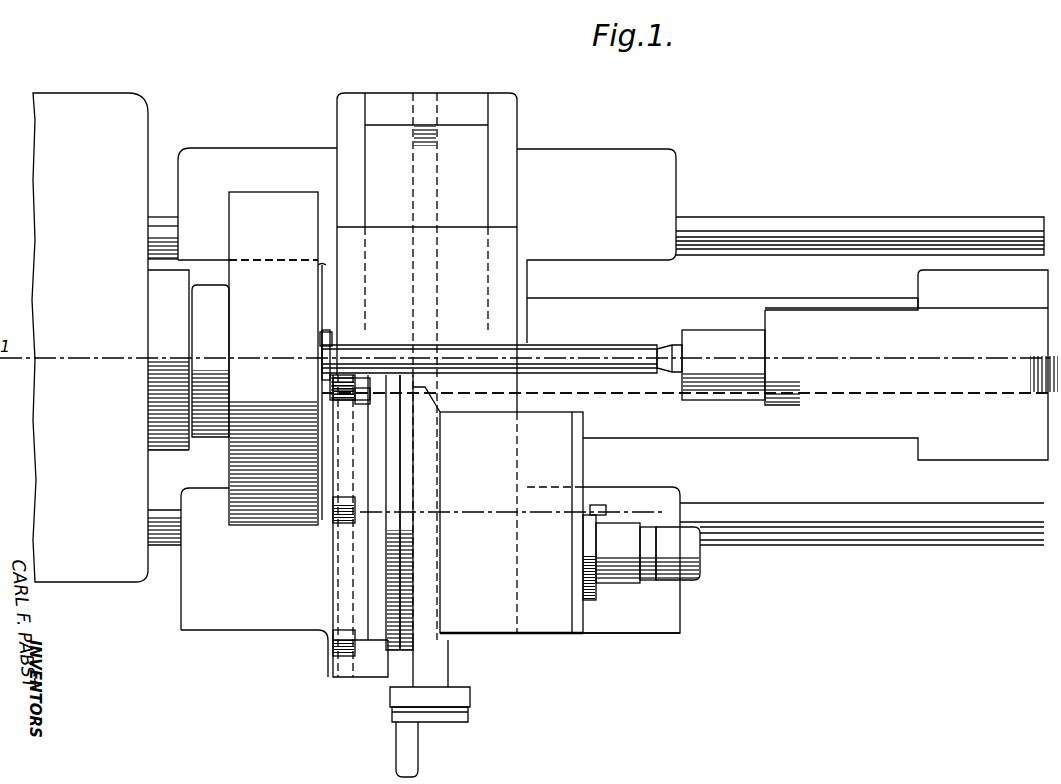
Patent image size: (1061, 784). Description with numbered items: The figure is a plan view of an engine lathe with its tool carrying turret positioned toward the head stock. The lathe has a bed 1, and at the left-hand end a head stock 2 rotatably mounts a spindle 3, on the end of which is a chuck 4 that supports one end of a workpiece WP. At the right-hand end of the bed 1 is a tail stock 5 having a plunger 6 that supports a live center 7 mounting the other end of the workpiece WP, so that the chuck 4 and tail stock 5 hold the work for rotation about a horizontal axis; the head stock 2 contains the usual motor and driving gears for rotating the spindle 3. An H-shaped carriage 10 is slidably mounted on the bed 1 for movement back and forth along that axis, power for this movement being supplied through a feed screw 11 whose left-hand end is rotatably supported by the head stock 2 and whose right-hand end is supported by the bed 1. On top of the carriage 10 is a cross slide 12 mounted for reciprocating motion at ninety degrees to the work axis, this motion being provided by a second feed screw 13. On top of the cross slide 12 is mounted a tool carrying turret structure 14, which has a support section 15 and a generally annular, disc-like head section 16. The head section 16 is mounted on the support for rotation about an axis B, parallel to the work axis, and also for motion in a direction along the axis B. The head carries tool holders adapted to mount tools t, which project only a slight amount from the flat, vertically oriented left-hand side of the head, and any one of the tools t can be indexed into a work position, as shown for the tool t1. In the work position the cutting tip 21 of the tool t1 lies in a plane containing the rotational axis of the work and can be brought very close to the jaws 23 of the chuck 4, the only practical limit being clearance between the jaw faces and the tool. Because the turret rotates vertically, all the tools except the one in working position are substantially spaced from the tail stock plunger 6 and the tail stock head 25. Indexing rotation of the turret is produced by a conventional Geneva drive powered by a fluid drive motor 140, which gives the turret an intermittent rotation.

The bed 1 is at (832, 213).
The head stock 2 is at (108, 91).
The spindle 3 is at (229, 300).
The chuck 4 is at (262, 192).
The tail stock 5 is at (869, 304).
The plunger 6 is at (725, 332).
The live center 7 is at (668, 348).
The H-shaped carriage 10 is at (645, 147).
The feed screw 11 is at (645, 395).
The cross slide 12 is at (458, 228).
The feed screw 13 is at (437, 140).
The tool carrying turret structure 14 is at (473, 625).
The support section 15 is at (552, 637).
The head section 16 is at (345, 676).
The cutting tip 21 is at (336, 362).
The jaws 23 is at (326, 335).
The tail stock head 25 is at (768, 312).
The fluid drive motor 140 is at (702, 565).
The workpiece WP is at (580, 345).
The axis B is at (547, 506).
The tools t is at (333, 513).
The tool t1 is at (333, 388).